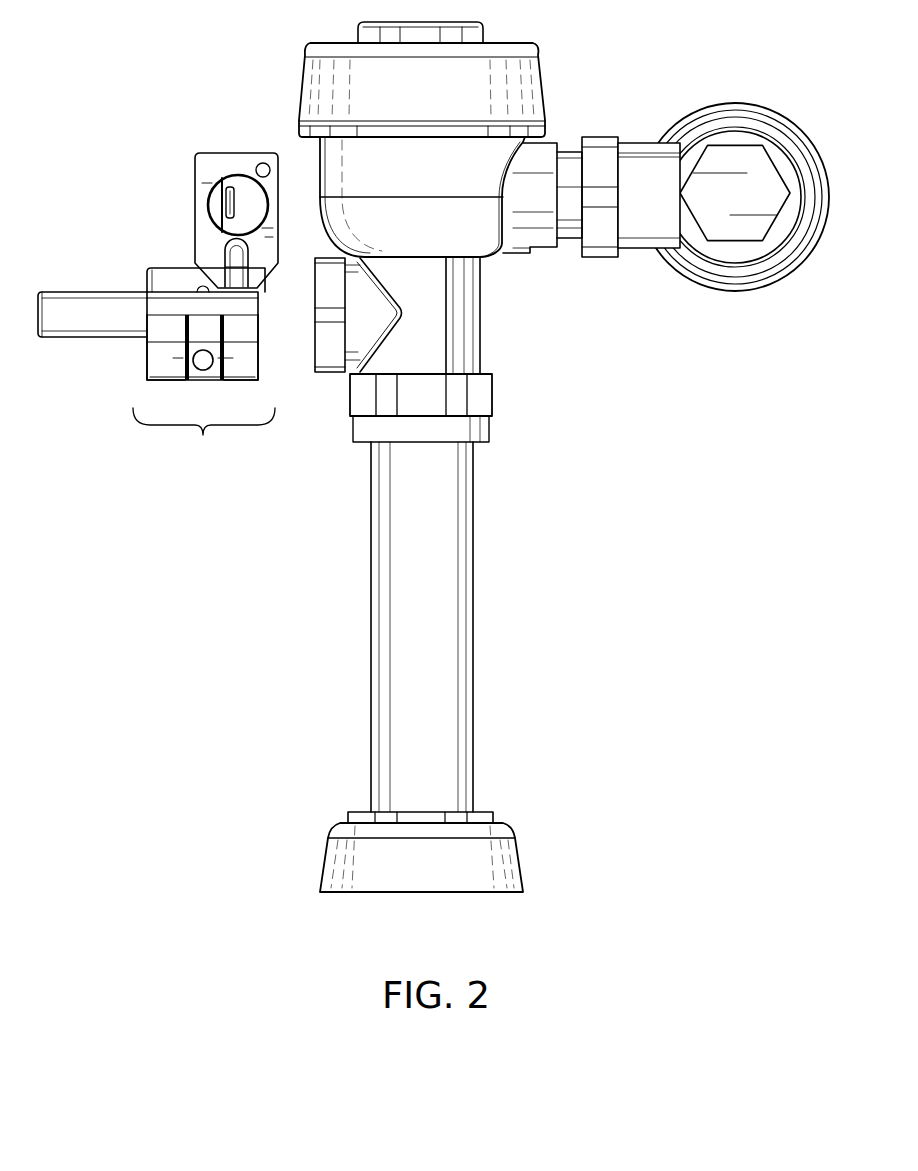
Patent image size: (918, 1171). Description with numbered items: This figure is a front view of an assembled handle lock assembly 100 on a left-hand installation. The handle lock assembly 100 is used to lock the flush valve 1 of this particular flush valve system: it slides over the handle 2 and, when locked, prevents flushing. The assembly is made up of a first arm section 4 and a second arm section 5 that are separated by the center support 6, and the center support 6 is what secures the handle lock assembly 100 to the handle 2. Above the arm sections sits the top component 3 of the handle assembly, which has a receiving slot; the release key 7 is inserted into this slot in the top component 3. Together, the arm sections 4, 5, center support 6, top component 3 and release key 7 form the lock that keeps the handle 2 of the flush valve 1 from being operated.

The flush valve 1 is at (305, 78).
The handle 2 is at (88, 330).
The top component 3 is at (163, 270).
The first arm section 4 is at (165, 375).
The second arm section 5 is at (240, 375).
The center support 6 is at (198, 375).
The release key 7 is at (218, 158).
The handle lock assembly 100 is at (205, 292).